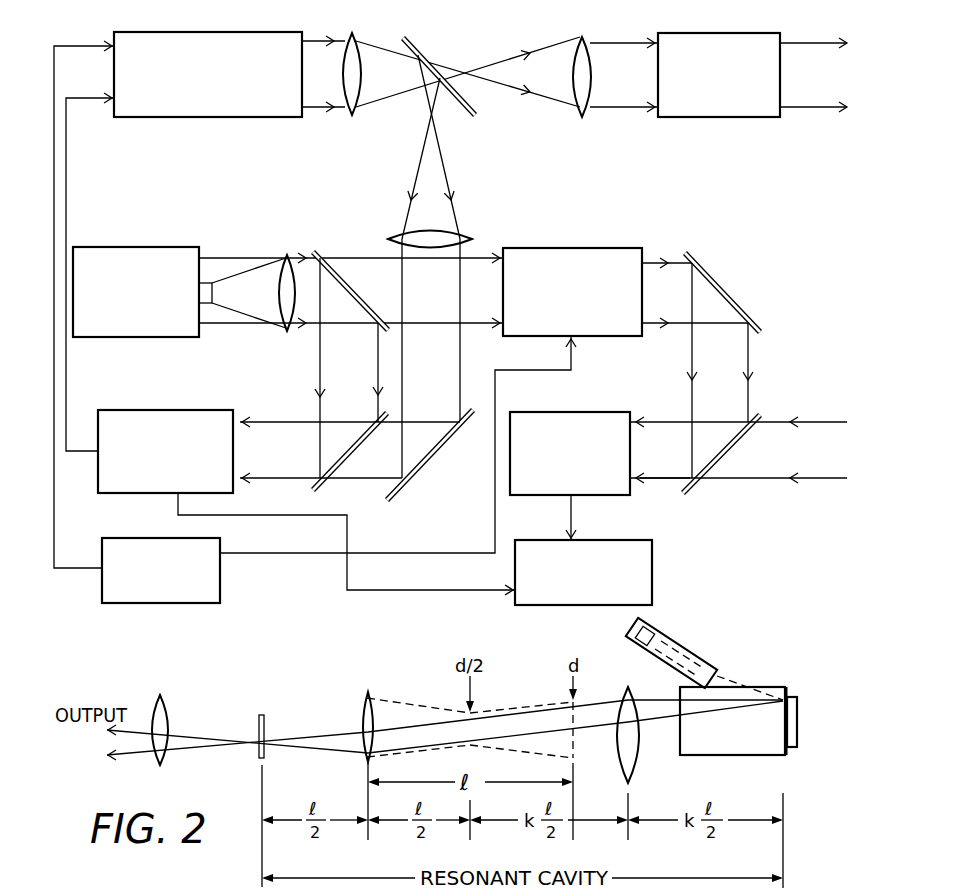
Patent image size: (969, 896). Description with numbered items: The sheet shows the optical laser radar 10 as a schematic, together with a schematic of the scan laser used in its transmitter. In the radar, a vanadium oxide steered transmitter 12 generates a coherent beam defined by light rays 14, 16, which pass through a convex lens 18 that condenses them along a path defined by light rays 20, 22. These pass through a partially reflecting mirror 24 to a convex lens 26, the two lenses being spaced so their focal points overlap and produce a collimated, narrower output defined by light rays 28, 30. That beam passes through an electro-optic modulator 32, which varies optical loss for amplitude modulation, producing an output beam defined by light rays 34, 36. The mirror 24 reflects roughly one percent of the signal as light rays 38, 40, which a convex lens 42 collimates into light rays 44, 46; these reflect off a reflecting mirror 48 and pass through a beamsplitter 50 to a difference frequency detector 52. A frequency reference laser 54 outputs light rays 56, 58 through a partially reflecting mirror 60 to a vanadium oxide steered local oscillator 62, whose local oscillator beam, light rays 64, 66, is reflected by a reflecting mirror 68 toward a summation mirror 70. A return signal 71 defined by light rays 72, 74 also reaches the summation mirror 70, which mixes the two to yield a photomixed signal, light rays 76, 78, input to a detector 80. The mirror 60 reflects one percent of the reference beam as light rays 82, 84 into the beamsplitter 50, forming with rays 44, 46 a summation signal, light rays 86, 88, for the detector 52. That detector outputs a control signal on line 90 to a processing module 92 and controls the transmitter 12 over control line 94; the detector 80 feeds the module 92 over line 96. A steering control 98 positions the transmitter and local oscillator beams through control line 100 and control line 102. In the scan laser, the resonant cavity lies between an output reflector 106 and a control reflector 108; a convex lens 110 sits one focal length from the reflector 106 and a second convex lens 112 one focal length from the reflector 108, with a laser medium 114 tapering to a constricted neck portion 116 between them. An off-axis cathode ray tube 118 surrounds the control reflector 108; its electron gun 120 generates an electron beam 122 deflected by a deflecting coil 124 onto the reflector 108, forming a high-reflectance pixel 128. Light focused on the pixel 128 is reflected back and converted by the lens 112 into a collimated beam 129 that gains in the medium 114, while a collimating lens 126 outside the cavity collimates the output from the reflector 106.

In FIG. 1, the optical laser radar 10 is at (101, 20).
In FIG. 1, the vanadium oxide steered transmitter 12 is at (200, 40).
In FIG. 1, the light ray 14 is at (315, 36).
In FIG. 1, the light ray 16 is at (322, 110).
In FIG. 1, the convex lens 18 is at (357, 50).
In FIG. 1, the light ray 20 is at (386, 48).
In FIG. 1, the light ray 22 is at (398, 95).
In FIG. 1, the partially reflecting mirror 24 is at (415, 45).
In FIG. 1, the convex lens 26 is at (578, 42).
In FIG. 1, the light ray 28 is at (616, 40).
In FIG. 1, the light ray 30 is at (600, 110).
In FIG. 1, the electro-optic modulator 32 is at (706, 40).
In FIG. 1, the light ray 34 is at (806, 40).
In FIG. 1, the light ray 36 is at (805, 112).
In FIG. 1, the light ray 38 is at (448, 162).
In FIG. 1, the light ray 40 is at (419, 163).
In FIG. 1, the convex lens 42 is at (462, 240).
In FIG. 1, the light ray 44 is at (458, 370).
In FIG. 1, the light ray 46 is at (402, 307).
In FIG. 1, the reflecting mirror 48 is at (418, 472).
In FIG. 1, the beamsplitter 50 is at (337, 468).
In FIG. 1, the difference frequency detector 52 is at (166, 410).
In FIG. 1, the frequency reference laser 54 is at (133, 247).
In FIG. 1, the light ray 56 is at (286, 258).
In FIG. 1, the light ray 58 is at (303, 333).
In FIG. 1, the partially reflecting mirror 60 is at (343, 278).
In FIG. 1, the vanadium oxide steered local oscillator 62 is at (592, 250).
In FIG. 1, the light ray 64 is at (653, 262).
In FIG. 1, the light ray 66 is at (681, 330).
In FIG. 1, the reflecting mirror 68 is at (713, 282).
In FIG. 1, the summation mirror 70 is at (715, 468).
In FIG. 1, the return signal 71 is at (798, 450).
In FIG. 1, the light ray 72 is at (767, 420).
In FIG. 1, the light ray 74 is at (810, 486).
In FIG. 1, the light ray 76 is at (673, 422).
In FIG. 1, the light ray 78 is at (666, 482).
In FIG. 1, the detector 80 is at (532, 430).
In FIG. 1, the light ray 82 is at (318, 384).
In FIG. 1, the light ray 84 is at (378, 354).
In FIG. 1, the light ray 86 is at (287, 480).
In FIG. 1, the light ray 88 is at (299, 425).
In FIG. 1, the line 90 is at (350, 522).
In FIG. 1, the processing module 92 is at (566, 600).
In FIG. 1, the control line 94 is at (66, 199).
In FIG. 1, the line 96 is at (568, 512).
In FIG. 1, the steering control 98 is at (222, 588).
In FIG. 1, the control line 100 is at (54, 170).
In FIG. 1, the control line 102 is at (412, 553).
In FIG. 2, the output reflector 106 is at (265, 722).
In FIG. 2, the control reflector 108 is at (784, 695).
In FIG. 2, the convex lens 110 is at (365, 712).
In FIG. 2, the second convex lens 112 is at (626, 702).
In FIG. 2, the laser medium 114 is at (497, 710).
In FIG. 2, the constricted neck portion 116 is at (479, 712).
In FIG. 2, the off-axis cathode ray tube 118 is at (742, 740).
In FIG. 2, the electron gun 120 is at (652, 631).
In FIG. 2, the electron beam 122 is at (732, 676).
In FIG. 2, the deflecting coil 124 is at (703, 660).
In FIG. 2, the collimating lens 126 is at (163, 715).
In FIG. 2, the pixel 128 is at (798, 712).
In FIG. 2, the collimated beam 129 is at (423, 735).